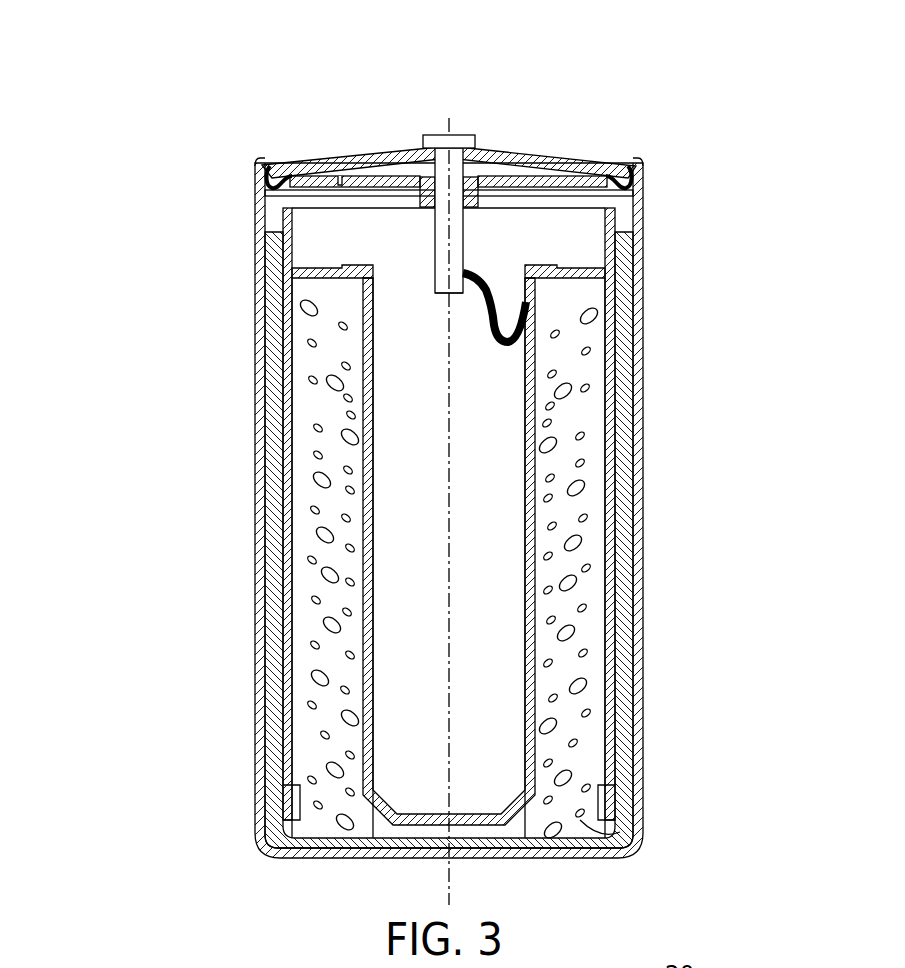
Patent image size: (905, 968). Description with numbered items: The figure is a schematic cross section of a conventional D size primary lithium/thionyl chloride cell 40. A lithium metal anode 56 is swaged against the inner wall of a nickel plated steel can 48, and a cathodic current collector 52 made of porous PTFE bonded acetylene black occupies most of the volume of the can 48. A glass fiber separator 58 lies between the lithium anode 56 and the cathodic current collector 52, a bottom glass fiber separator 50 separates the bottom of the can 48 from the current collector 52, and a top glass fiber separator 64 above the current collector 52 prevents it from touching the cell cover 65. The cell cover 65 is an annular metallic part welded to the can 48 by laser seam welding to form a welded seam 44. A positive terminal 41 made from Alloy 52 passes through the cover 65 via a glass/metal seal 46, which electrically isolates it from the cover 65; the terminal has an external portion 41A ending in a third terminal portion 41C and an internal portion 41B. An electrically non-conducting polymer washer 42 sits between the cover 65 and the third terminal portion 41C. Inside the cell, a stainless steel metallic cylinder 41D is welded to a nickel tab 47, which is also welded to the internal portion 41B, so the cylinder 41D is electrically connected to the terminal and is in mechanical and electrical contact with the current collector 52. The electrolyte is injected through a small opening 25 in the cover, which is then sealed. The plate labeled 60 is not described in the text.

The cell 40 is at (503, 93).
The positive terminal 41 is at (428, 246).
The external portion 41A is at (457, 170).
The internal portion 41B is at (445, 294).
The third terminal portion 41C is at (448, 135).
The metallic cylinder 41D is at (368, 573).
The electrically non-conducting polymer washer 42 is at (556, 150).
The welded seam 44 is at (645, 180).
The glass/metal seal 46 is at (480, 200).
The nickel tab 47 is at (498, 342).
The nickel plated steel can 48 is at (640, 480).
The bottom glass fiber separator 50 is at (560, 836).
The cathodic current collector 52 is at (330, 673).
The lithium metal anode 56 is at (278, 475).
The glass fiber separator 58 is at (290, 400).
The upper plate 60 is at (307, 280).
The top glass fiber separator 64 is at (327, 268).
The cell cover 65 is at (313, 173).
The small opening 25 is at (340, 176).